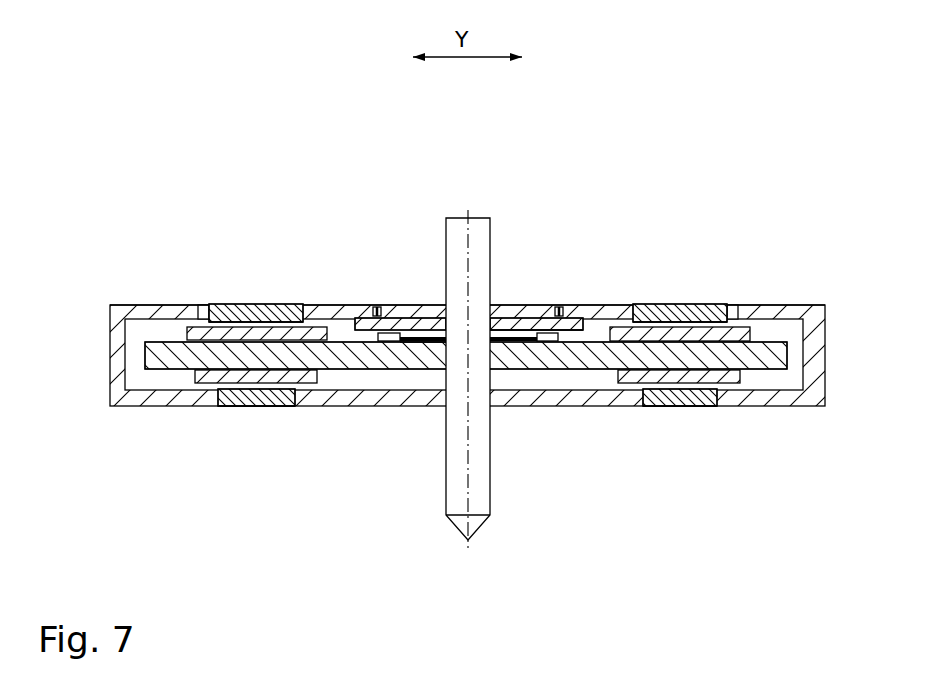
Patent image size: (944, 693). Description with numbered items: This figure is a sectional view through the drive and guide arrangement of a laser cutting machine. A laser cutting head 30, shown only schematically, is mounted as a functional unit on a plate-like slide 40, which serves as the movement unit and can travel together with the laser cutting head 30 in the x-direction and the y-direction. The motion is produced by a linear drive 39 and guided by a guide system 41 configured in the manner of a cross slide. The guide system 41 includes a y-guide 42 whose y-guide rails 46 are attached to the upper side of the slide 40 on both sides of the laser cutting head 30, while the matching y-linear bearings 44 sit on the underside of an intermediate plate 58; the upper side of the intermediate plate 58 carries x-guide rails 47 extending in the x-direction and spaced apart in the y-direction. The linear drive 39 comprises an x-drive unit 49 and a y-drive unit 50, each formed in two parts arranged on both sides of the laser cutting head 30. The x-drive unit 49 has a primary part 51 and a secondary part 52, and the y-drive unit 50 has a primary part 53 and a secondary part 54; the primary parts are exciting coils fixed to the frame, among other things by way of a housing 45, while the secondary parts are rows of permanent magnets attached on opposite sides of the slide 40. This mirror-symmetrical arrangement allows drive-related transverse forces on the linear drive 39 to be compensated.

The laser cutting head 30 is at (487, 532).
The linear drive 39 is at (301, 303).
The slide 40 is at (155, 354).
The guide system 41 is at (423, 312).
The y-guide 42 is at (410, 347).
The y-linear bearings 44 is at (428, 341).
The housing 45 is at (815, 358).
The y-guide rails 46 is at (387, 341).
The x-guide rails 47 is at (377, 306).
The x-drive unit 49 is at (470, 480).
The y-drive unit 50 is at (471, 244).
The primary part 51 is at (475, 442).
The secondary part 52 is at (455, 412).
The primary part 53 is at (471, 265).
The secondary part 54 is at (462, 292).
The intermediate plate 58 is at (518, 323).